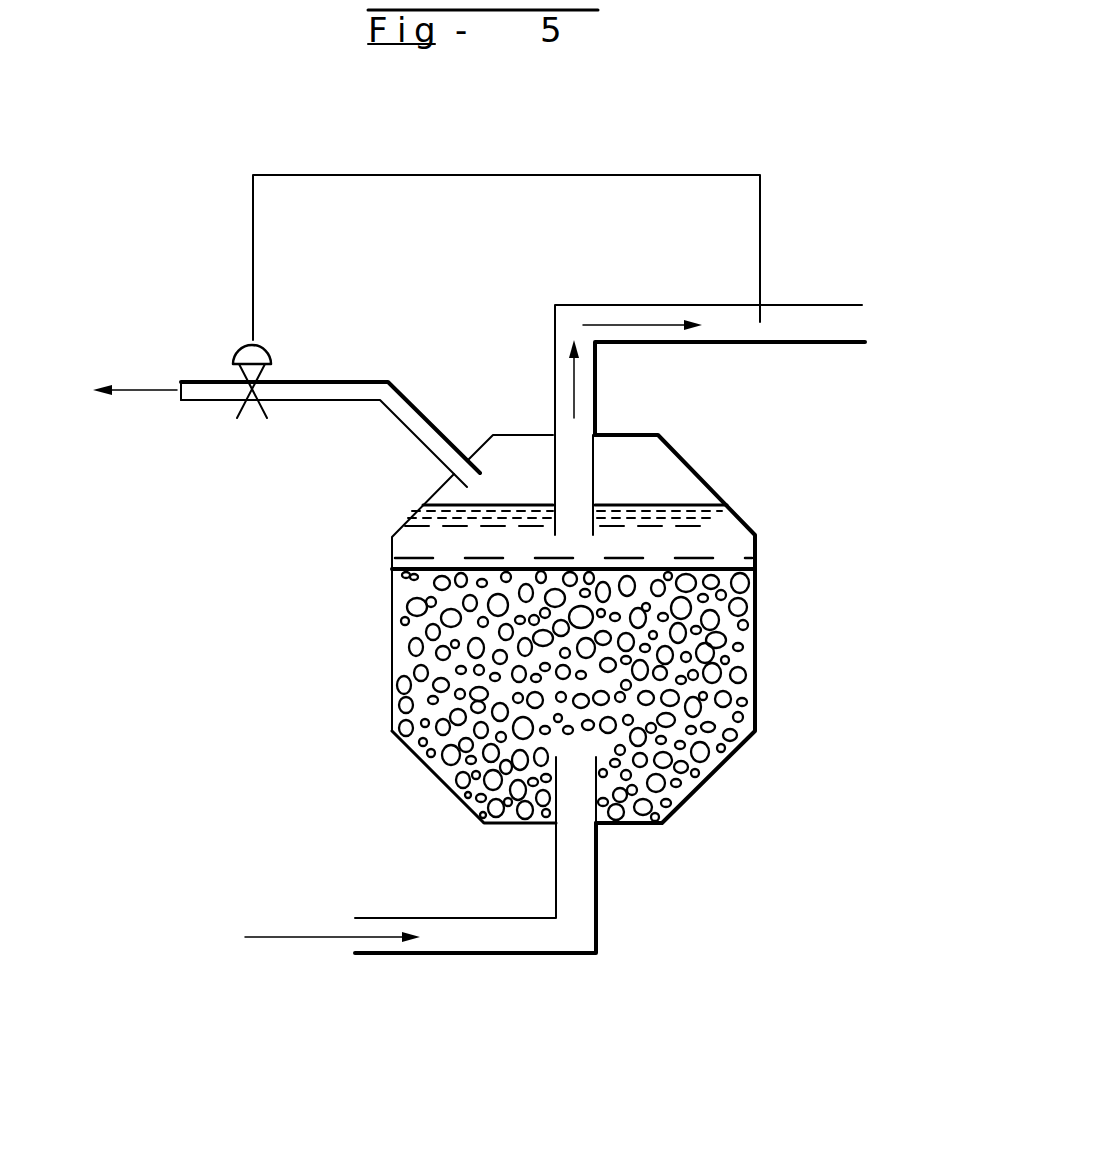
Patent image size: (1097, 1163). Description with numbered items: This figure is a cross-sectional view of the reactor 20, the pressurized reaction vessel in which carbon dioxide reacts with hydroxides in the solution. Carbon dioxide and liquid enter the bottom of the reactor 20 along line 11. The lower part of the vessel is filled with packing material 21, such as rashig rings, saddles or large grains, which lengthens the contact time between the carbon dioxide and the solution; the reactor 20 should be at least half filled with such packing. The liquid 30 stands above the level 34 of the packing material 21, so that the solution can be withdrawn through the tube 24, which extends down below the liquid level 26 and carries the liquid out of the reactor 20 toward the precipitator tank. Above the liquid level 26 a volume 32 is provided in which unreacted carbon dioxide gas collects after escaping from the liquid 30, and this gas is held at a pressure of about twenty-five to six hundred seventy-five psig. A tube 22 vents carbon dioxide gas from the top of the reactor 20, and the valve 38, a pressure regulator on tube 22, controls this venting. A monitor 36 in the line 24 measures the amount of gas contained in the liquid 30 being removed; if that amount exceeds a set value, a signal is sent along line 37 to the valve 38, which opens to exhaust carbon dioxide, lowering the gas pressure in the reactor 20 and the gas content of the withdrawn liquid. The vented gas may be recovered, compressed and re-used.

The line 11 is at (423, 955).
The reactor 20 is at (760, 668).
The packing material 21 is at (724, 702).
The tube 22 is at (382, 381).
The tube 24 is at (672, 304).
The liquid level 26 is at (695, 500).
The liquid 30 is at (740, 547).
The volume 32 is at (675, 475).
The level of packing material 34 is at (738, 562).
The monitor 36 is at (765, 318).
The line 37 is at (548, 175).
The valve 38 is at (266, 347).